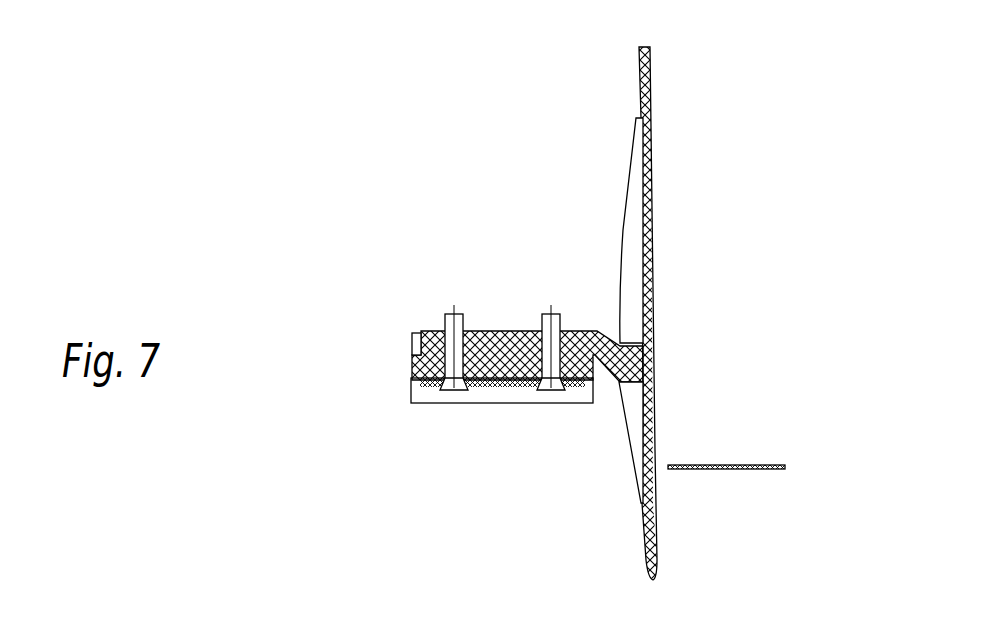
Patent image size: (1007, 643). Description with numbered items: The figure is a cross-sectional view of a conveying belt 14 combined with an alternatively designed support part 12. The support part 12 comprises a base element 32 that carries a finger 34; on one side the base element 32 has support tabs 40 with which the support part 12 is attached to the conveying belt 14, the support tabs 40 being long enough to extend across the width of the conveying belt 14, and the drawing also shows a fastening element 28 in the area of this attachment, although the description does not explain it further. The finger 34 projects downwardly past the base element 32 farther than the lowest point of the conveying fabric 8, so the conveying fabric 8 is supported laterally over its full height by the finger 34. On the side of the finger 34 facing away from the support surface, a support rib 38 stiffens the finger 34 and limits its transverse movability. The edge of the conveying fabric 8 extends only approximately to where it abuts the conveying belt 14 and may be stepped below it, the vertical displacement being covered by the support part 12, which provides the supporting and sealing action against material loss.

The conveying fabric 8 is at (732, 468).
The support part 12 is at (654, 245).
The conveying belt 14 is at (408, 342).
The bolt 28 is at (452, 328).
The base element 32 is at (633, 365).
The finger 34 is at (647, 163).
The support rib 38 is at (633, 262).
The support tab 40 is at (516, 345).